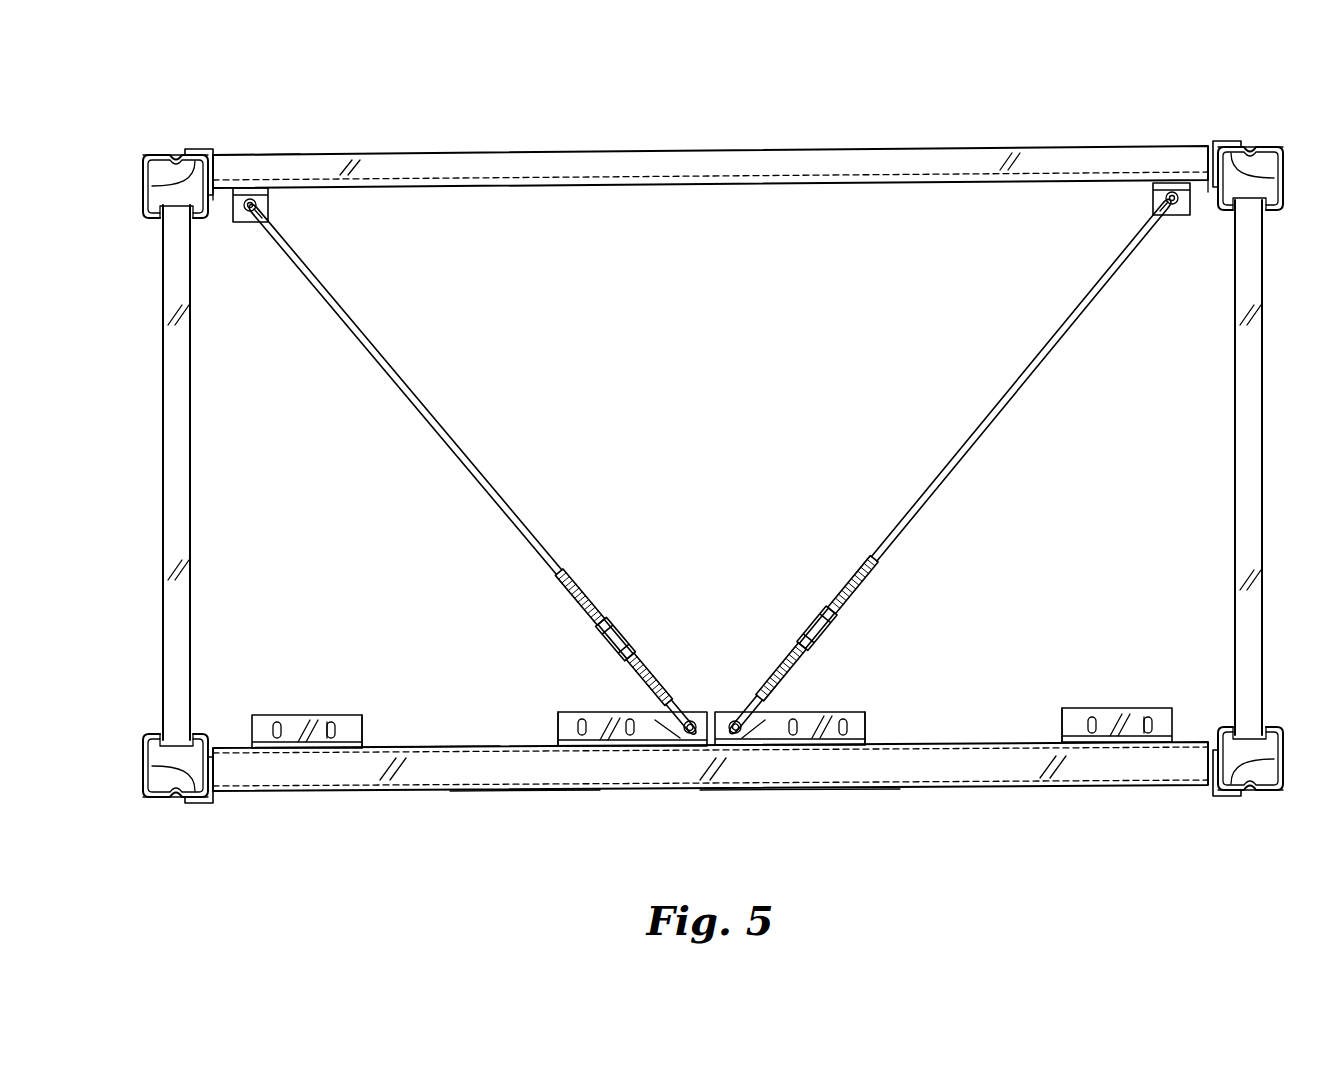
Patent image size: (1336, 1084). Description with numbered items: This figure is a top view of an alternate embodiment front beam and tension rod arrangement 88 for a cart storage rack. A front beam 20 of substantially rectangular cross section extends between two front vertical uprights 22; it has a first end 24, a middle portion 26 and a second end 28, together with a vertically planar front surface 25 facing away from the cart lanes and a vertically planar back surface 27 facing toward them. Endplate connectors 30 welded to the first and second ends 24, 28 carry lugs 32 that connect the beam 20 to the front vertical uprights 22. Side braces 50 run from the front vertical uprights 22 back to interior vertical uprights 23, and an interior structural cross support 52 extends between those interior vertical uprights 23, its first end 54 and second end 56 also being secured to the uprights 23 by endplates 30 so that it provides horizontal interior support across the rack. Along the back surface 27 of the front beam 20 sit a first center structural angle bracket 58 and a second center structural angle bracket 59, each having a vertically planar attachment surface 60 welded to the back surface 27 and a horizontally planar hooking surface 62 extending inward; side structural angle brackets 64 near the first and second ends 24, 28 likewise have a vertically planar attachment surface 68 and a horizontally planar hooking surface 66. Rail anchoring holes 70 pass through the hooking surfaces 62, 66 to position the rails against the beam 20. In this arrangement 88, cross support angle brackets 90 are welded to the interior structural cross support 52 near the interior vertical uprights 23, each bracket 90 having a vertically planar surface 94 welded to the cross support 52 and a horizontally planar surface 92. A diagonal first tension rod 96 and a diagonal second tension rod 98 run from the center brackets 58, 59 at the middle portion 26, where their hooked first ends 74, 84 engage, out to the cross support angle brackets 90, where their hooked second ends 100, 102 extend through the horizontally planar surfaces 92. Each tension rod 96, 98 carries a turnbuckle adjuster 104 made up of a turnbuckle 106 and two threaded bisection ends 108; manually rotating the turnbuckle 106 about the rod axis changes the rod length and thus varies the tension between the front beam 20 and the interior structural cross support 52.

The front beam 20 is at (975, 787).
The front vertical uprights 22 is at (150, 790).
The interior vertical uprights 23 is at (145, 165).
The first end 24 is at (238, 805).
The front surface 25 is at (510, 792).
The middle portion 26 is at (812, 790).
The back surface 27 is at (440, 746).
The second end 28 is at (1190, 795).
The endplate connectors 30 is at (203, 151).
The lugs 32 is at (165, 183).
The side braces 50 is at (175, 478).
The interior structural cross support 52 is at (650, 152).
The first end 54 is at (222, 135).
The second end 56 is at (1203, 128).
The first center structural angle bracket 58 is at (590, 712).
The second center structural angle bracket 59 is at (800, 730).
The vertically planar attachment surface 60 is at (578, 728).
The horizontally planar hooking surface 62 is at (650, 715).
The side structural angle brackets 64 is at (327, 727).
The horizontally planar hooking surface 66 is at (273, 730).
The vertically planar attachment surface 68 is at (358, 742).
The rail anchoring holes 70 is at (331, 728).
The hooked first end 74 is at (683, 718).
The hooked first end 84 is at (738, 718).
The front beam and tension rod arrangement 88 is at (803, 94).
The cross support angle brackets 90 is at (238, 222).
The horizontally planar surfaces 92 is at (265, 195).
The vertically planar surfaces 94 is at (225, 215).
The first tension rod 96 is at (395, 377).
The second tension rod 98 is at (1015, 388).
The hooked second end 100 is at (262, 212).
The hooked second end 102 is at (1165, 205).
The turnbuckle adjuster 104 is at (716, 585).
The turnbuckle 106 is at (613, 632).
The threaded bisection ends 108 is at (600, 618).